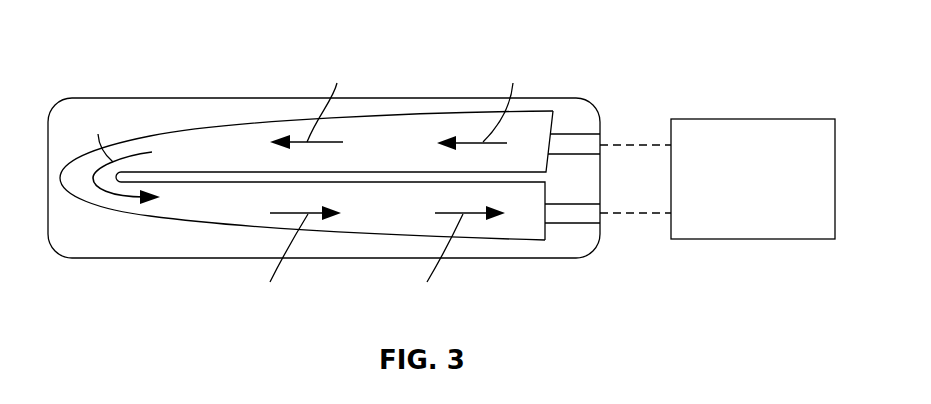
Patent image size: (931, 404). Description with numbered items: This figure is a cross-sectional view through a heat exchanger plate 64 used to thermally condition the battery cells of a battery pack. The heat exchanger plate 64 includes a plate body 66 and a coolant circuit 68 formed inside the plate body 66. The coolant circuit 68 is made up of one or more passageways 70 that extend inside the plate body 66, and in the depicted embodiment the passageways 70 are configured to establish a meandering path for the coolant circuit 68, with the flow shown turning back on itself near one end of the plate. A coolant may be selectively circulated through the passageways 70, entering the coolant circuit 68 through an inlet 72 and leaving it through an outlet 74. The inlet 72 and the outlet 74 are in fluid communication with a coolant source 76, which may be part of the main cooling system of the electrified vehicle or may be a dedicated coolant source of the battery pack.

The heat exchanger plate 64 is at (118, 77).
The plate body 66 is at (232, 98).
The coolant circuit 68 is at (371, 129).
The passageways 70 is at (430, 121).
The inlet 72 is at (601, 140).
The outlet 74 is at (601, 215).
The coolant source 76 is at (752, 118).